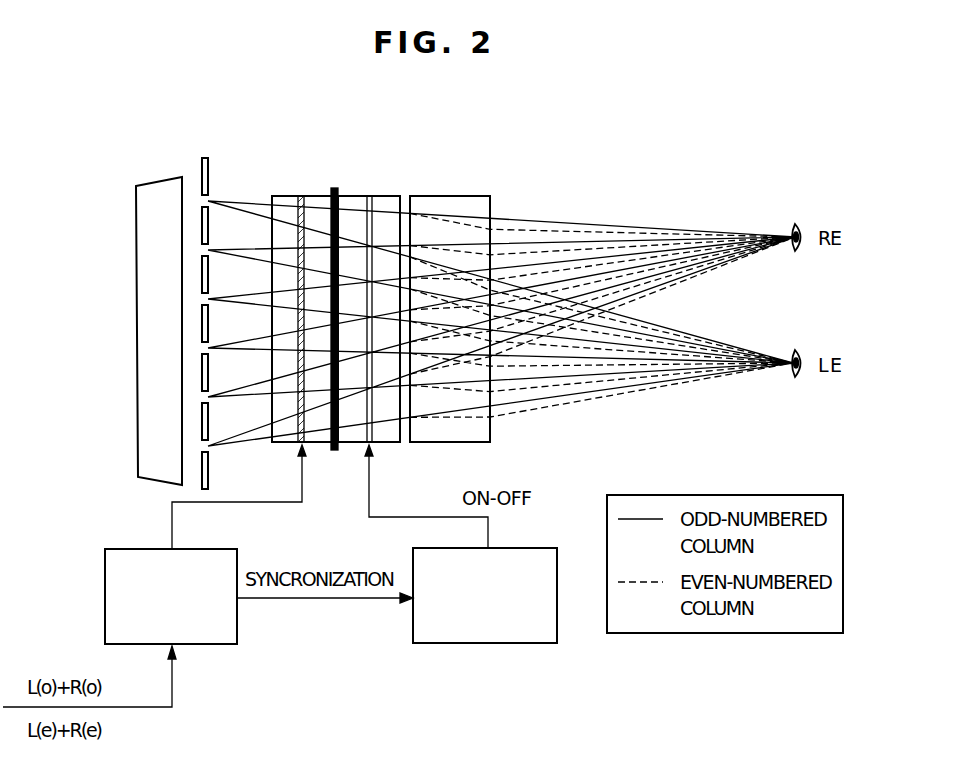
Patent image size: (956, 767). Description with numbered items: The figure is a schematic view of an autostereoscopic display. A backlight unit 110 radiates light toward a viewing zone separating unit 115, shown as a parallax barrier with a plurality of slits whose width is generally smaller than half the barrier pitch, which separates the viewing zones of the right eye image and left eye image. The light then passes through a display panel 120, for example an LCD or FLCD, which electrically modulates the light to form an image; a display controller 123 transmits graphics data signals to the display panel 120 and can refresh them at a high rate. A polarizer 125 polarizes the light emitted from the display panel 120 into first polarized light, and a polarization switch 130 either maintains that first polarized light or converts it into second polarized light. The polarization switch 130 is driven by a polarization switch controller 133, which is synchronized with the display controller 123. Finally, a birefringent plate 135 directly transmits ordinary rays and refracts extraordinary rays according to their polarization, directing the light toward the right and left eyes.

The backlight unit 110 is at (160, 194).
The viewing zone separating unit 115 is at (203, 157).
The display panel 120 is at (299, 194).
The polarizer 125 is at (335, 187).
The polarization switch 130 is at (370, 194).
The birefringent plate 135 is at (453, 195).
The display controller 123 is at (105, 597).
The polarization switch controller 133 is at (484, 645).